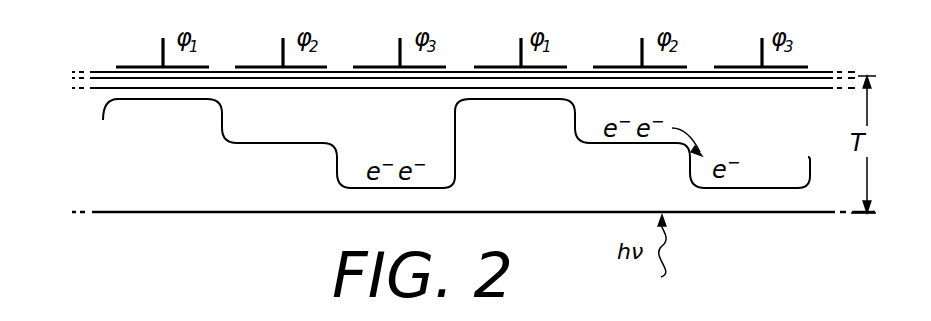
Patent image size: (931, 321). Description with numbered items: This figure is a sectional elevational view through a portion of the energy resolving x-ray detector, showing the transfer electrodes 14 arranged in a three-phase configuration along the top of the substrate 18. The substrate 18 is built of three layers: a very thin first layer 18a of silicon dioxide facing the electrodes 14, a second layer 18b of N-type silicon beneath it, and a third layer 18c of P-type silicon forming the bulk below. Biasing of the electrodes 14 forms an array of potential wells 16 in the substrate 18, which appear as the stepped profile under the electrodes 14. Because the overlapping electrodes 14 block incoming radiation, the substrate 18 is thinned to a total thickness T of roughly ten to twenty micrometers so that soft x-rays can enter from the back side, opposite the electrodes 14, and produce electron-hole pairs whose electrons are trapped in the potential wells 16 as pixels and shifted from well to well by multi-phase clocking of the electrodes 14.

The transfer electrodes 14 is at (143, 62).
The potential wells 16 is at (170, 196).
The substrate 18 is at (133, 213).
The first layer 18a is at (70, 71).
The second layer 18b is at (72, 87).
The third layer 18c is at (94, 187).